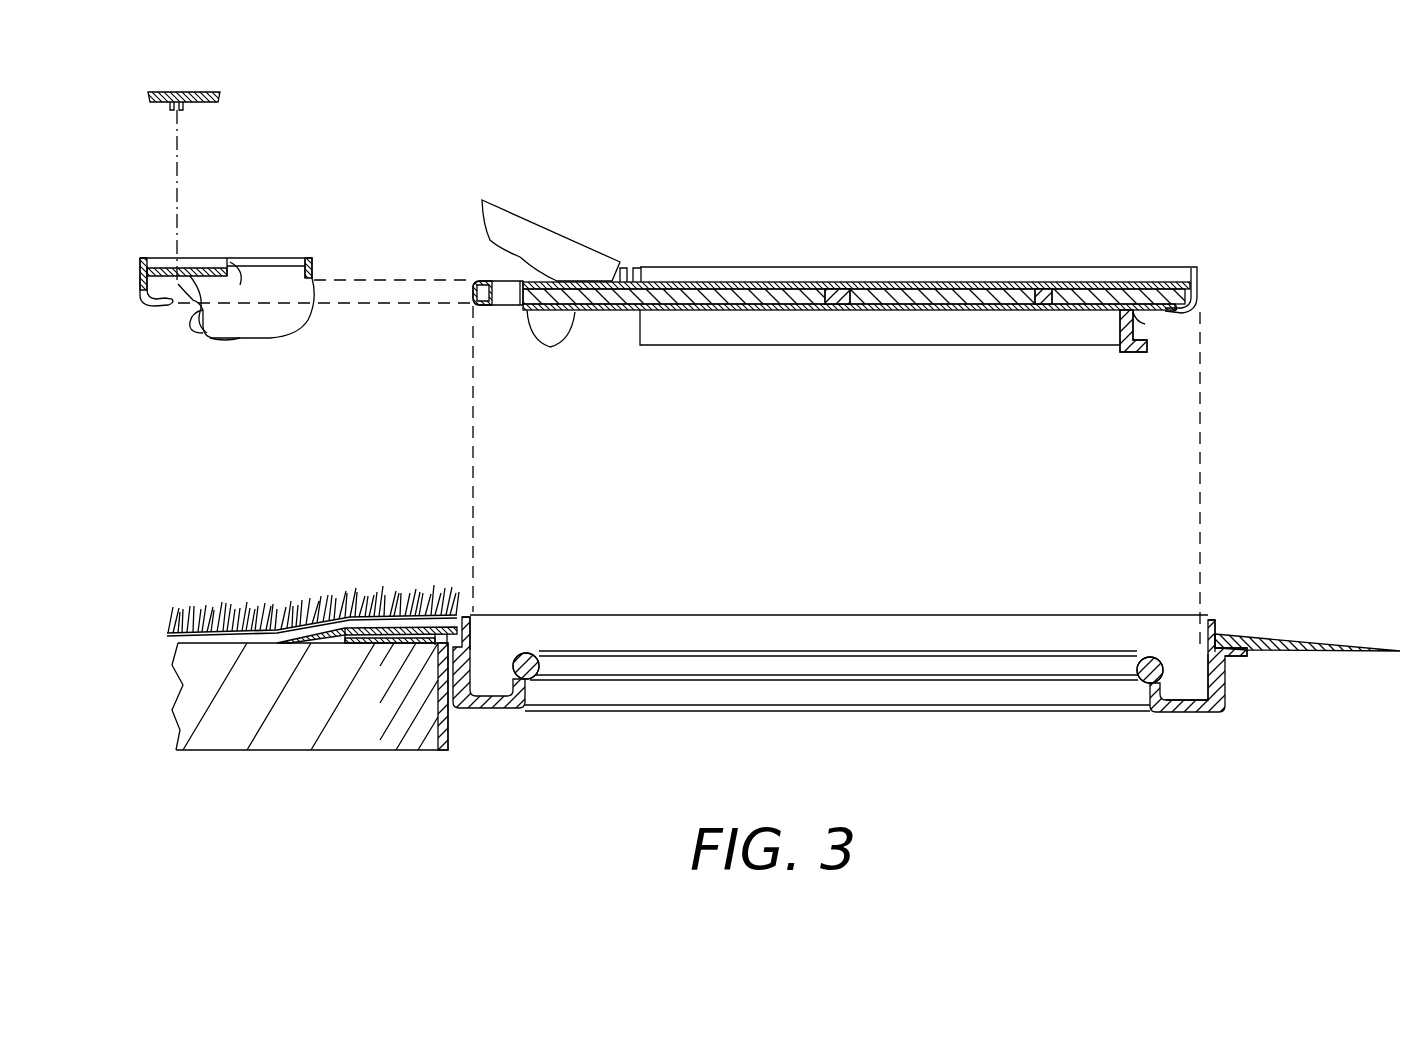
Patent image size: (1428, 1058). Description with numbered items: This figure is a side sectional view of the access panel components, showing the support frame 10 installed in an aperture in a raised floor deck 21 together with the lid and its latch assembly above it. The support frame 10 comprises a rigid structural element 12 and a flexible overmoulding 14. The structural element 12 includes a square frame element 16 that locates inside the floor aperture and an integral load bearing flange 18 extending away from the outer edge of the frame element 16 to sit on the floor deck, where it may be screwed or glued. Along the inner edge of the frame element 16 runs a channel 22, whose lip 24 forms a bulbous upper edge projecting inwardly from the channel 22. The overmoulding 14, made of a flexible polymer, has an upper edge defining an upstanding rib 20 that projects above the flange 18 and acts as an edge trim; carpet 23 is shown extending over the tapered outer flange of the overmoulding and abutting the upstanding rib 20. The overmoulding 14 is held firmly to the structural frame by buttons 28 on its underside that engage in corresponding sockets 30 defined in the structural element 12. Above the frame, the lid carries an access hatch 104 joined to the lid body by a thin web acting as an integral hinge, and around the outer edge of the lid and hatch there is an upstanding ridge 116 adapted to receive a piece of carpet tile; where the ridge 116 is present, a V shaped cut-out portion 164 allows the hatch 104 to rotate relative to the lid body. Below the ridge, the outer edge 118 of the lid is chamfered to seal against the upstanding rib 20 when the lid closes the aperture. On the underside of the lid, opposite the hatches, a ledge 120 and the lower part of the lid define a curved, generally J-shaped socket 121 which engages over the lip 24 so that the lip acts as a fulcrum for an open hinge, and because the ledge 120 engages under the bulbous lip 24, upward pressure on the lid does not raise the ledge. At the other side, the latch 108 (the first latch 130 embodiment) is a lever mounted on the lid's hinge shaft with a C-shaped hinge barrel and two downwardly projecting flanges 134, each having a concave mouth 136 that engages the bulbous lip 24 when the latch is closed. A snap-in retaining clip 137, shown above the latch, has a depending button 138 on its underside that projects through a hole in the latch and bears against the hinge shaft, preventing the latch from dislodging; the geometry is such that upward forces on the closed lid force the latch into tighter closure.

The support frame 10 is at (915, 635).
The structural element 12 is at (407, 648).
The flexible overmoulding 14 is at (350, 605).
The frame element 16 is at (723, 623).
The load bearing flange 18 is at (1282, 644).
The upstanding rib 20 is at (467, 613).
The raised floor deck 21 is at (287, 731).
The channel 22 is at (1188, 690).
The carpet 23 is at (240, 614).
The lip 24 is at (528, 650).
The buttons 28 is at (1243, 652).
The sockets 30 is at (430, 652).
The access hatch 104 is at (560, 246).
The latch 108 is at (231, 326).
The upstanding ridge 116 is at (1038, 280).
The outer edge 118 is at (1190, 313).
The ledge 120 is at (1142, 353).
The socket 121 is at (1137, 323).
The latch 130 is at (230, 328).
The downwardly projecting flanges 134 is at (222, 292).
The concave mouth 136 is at (200, 308).
The retaining clip 137 is at (205, 93).
The button 138 is at (183, 110).
The V shaped cut-out portion 164 is at (638, 268).